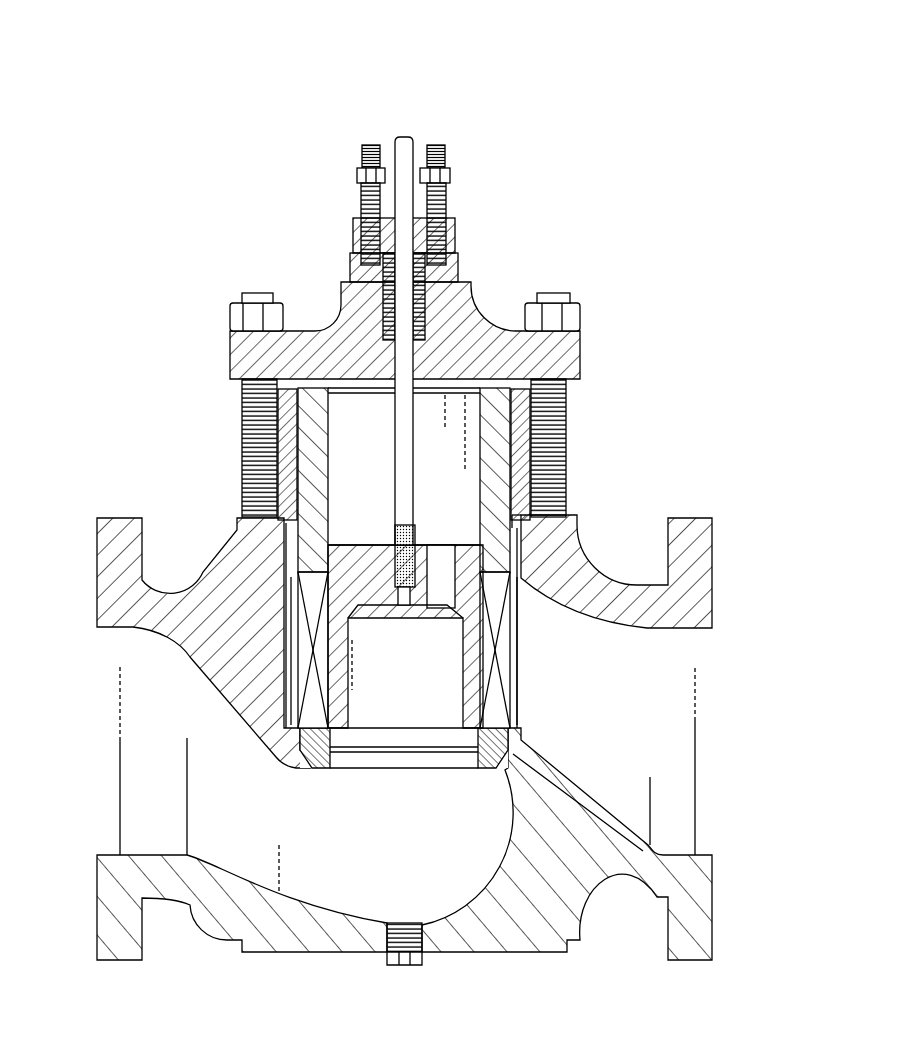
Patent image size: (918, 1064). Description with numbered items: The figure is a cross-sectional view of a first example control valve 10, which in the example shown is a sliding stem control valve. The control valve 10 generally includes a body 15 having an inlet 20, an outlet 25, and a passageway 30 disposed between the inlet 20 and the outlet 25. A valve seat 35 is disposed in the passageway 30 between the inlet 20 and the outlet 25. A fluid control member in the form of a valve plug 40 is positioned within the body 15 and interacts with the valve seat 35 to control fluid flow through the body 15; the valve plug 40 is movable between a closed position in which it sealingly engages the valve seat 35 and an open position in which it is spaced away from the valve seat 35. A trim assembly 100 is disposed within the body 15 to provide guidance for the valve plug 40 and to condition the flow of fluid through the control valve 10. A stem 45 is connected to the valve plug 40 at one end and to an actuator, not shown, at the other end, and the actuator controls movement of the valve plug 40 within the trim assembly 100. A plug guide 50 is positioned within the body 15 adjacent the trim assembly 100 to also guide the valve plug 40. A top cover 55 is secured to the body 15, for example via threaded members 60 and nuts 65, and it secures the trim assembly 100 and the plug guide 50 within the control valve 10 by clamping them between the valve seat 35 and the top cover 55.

The control valve 10 is at (155, 60).
The body 15 is at (226, 534).
The inlet 20 is at (97, 707).
The outlet 25 is at (712, 722).
The passageway 30 is at (501, 777).
The valve seat 35 is at (318, 770).
The valve plug 40 is at (465, 672).
The stem 45 is at (407, 468).
The plug guide 50 is at (495, 465).
The top cover 55 is at (568, 352).
The threaded members 60 is at (240, 410).
The nuts 65 is at (232, 318).
The trim assembly 100 is at (524, 663).